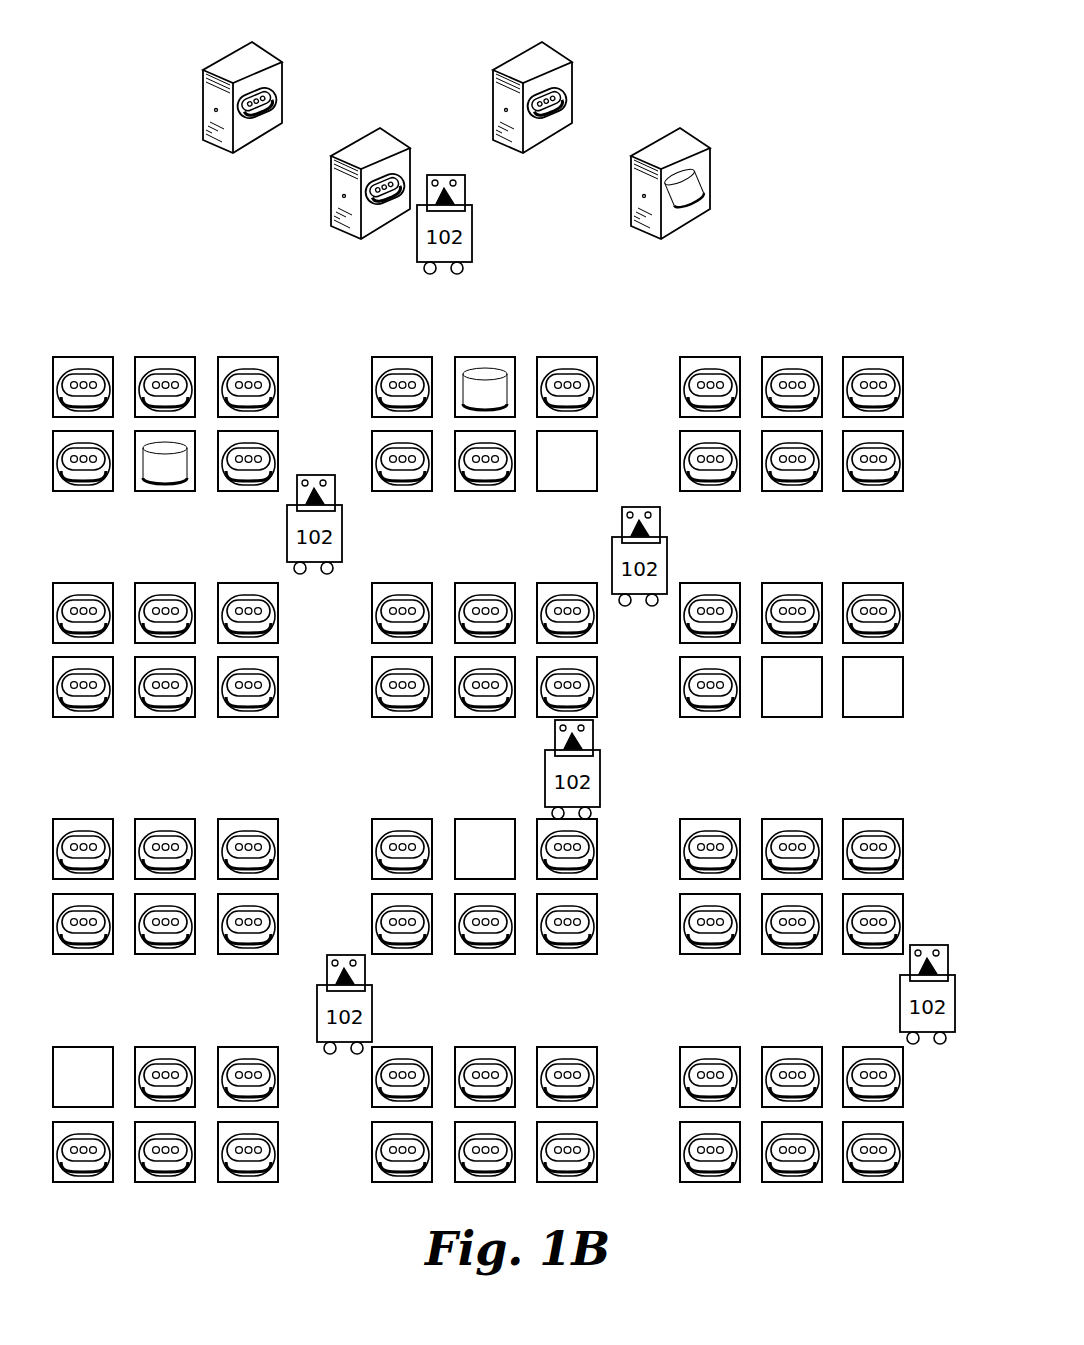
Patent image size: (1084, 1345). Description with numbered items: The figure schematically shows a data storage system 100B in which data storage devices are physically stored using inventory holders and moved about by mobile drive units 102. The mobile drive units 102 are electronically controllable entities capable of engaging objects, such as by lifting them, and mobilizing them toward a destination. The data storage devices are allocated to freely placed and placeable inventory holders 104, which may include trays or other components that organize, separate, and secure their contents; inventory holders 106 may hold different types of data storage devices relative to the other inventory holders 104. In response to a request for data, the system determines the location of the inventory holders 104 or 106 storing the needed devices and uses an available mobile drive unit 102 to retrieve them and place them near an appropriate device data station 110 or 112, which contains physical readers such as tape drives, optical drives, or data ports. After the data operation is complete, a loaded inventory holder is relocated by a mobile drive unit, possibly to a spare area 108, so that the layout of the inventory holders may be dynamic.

The data storage system 100B is at (880, 119).
The mobile drive unit 102 is at (621, 614).
The inventory holder 104 is at (278, 383).
The inventory holder 106 is at (150, 487).
The spare area 108 is at (598, 468).
The device data station 110 is at (573, 92).
The device data station 112 is at (710, 187).